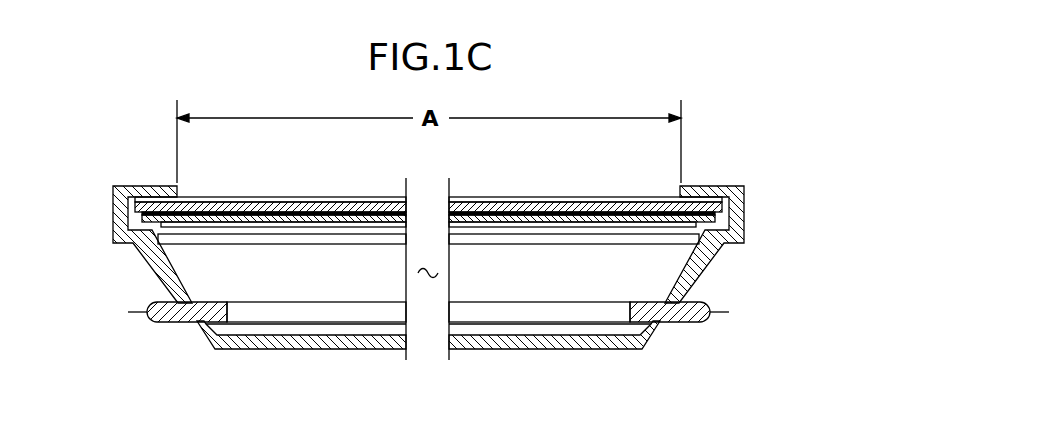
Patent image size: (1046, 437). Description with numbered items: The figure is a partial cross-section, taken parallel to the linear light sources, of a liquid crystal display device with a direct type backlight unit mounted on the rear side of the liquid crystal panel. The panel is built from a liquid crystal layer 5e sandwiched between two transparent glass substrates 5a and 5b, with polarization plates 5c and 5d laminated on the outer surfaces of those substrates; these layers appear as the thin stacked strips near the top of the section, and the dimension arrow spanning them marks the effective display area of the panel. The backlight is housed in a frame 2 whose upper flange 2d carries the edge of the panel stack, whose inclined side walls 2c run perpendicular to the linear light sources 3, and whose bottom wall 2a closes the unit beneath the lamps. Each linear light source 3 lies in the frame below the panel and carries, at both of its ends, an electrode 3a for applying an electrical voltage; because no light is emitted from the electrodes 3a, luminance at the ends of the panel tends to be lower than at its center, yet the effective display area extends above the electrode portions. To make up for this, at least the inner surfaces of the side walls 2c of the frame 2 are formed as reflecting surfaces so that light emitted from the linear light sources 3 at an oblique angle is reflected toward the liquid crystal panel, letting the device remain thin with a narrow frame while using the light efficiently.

The frame 2 is at (429, 271).
The bottom wall of frame 2a is at (330, 340).
The side wall of frame 2c is at (162, 272).
The flange of frame 2d is at (112, 186).
The linear light source 3 is at (260, 312).
The electrode 3a is at (145, 320).
The transparent substrate 5a is at (387, 205).
The transparent substrate 5b is at (340, 218).
The polarization plate 5c is at (298, 200).
The polarization plate 5d is at (255, 227).
The liquid crystal layer 5e is at (212, 205).